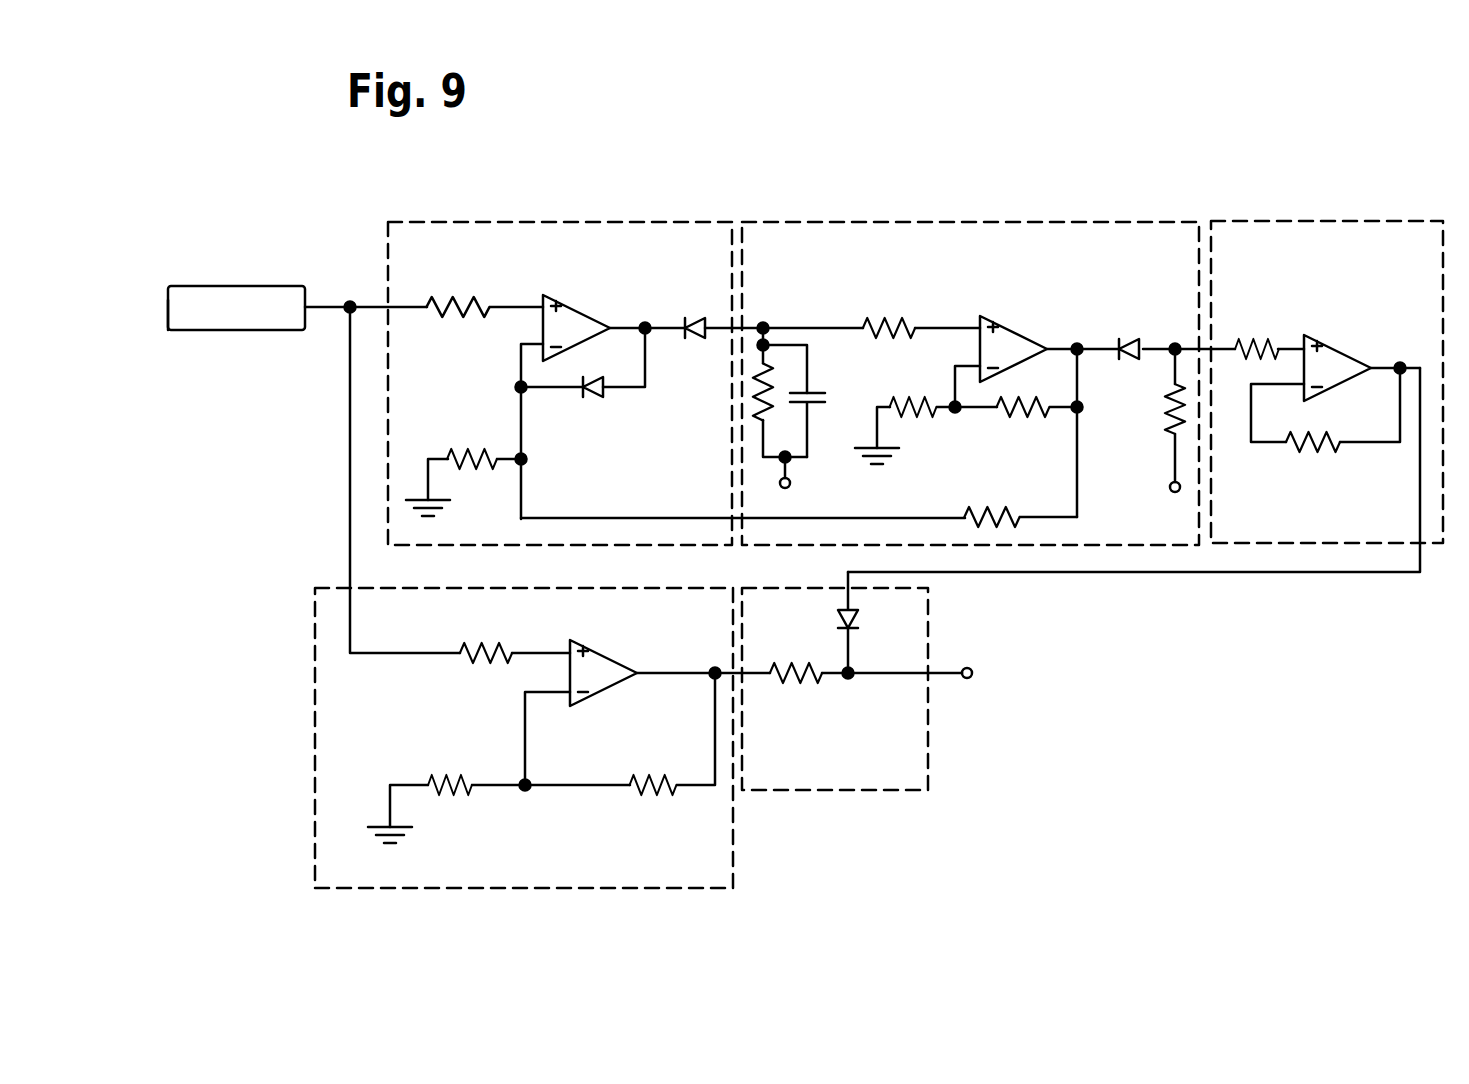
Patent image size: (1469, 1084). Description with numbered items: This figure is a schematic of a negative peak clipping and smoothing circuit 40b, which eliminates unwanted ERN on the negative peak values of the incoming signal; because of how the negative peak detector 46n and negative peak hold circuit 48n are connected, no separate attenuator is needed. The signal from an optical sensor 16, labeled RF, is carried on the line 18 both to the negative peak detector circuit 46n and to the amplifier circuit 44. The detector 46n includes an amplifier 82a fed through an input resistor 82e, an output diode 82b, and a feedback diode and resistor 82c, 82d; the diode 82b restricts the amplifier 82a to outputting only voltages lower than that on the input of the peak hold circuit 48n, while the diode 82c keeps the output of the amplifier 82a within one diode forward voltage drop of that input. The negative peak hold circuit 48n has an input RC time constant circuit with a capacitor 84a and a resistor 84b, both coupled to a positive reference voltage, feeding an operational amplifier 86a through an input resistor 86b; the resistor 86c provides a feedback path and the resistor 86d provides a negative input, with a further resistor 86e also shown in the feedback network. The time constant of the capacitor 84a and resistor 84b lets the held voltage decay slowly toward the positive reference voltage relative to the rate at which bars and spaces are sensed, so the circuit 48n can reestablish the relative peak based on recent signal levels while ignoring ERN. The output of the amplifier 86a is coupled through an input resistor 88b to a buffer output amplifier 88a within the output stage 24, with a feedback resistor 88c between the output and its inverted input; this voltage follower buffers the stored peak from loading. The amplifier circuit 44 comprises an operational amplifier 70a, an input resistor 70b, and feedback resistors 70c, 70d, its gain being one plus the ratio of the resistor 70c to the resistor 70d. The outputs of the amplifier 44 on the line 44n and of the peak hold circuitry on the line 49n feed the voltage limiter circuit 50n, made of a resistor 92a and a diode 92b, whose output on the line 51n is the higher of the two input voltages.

The optical sensor 16 is at (259, 286).
The line 18 is at (330, 305).
The feedback resistor / sensor RF is at (150, 306).
The output amplifier stage 24 is at (1310, 221).
The negative peak clipping and smoothing circuit 40b is at (888, 158).
The amplifier circuit 44 is at (733, 848).
The input line 44n is at (712, 671).
The negative peak detector circuit 46n is at (612, 222).
The negative peak hold circuit 48n is at (895, 222).
The input line 49n is at (1195, 574).
The voltage limiter circuit 50n is at (928, 752).
The line 51n is at (945, 672).
The operational amplifier 70a is at (637, 635).
The input resistor 70b is at (470, 665).
The feedback resistor 70c is at (675, 770).
The feedback resistor 70d is at (477, 722).
The amplifier 82a is at (573, 306).
The output diode 82b is at (683, 322).
The feedback diode 82c is at (597, 400).
The feedback resistor 82d is at (500, 412).
The input resistor 82e is at (472, 292).
The capacitor 84a is at (825, 398).
The resistor 84b is at (752, 420).
The operational amplifier 86a is at (1008, 327).
The input resistor 86b is at (900, 312).
The resistor 86c is at (1013, 418).
The resistor 86d is at (927, 420).
The feedback resistor 86e is at (975, 507).
The buffer output amplifier 88a is at (1410, 298).
The input resistor 88b is at (1255, 325).
The feedback resistor 88c is at (1330, 455).
The resistor 92a is at (800, 695).
The diode 92b is at (838, 615).